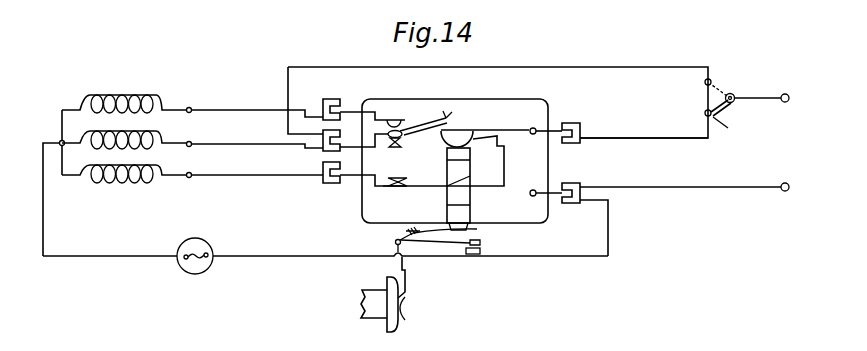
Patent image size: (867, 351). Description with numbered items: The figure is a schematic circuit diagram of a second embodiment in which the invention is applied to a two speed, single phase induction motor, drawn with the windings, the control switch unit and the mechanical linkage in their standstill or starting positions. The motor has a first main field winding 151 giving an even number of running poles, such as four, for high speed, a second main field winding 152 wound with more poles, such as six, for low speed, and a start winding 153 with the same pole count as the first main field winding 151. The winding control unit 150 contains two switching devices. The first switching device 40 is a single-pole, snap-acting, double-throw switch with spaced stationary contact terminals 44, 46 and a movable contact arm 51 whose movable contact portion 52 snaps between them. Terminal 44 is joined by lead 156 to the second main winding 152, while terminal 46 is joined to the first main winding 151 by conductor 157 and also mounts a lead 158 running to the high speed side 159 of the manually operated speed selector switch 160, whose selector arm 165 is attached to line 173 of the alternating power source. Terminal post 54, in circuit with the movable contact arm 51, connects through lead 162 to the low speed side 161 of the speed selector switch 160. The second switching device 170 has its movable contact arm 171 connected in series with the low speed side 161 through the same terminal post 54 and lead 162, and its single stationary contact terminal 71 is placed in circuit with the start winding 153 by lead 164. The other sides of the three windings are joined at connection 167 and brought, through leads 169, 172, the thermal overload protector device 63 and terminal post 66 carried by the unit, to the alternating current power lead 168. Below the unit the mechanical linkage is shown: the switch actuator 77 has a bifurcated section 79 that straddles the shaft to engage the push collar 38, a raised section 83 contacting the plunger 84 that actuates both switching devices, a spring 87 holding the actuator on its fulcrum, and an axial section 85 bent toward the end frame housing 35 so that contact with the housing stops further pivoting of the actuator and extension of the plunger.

The second main field winding 152 is at (160, 101).
The first main field winding 151 is at (163, 135).
The start winding 153 is at (135, 183).
The lead 156 is at (229, 109).
The conductor 157 is at (236, 143).
The lead 164 is at (258, 176).
The connection 167 is at (60, 141).
The stationary contact terminal 44 is at (343, 104).
The stationary contact terminal 46 is at (342, 146).
The stationary contact terminal 71 is at (354, 176).
The lead 158 is at (552, 66).
The winding control unit 150 is at (455, 150).
The first switching device 40 is at (537, 163).
The movable contact portion 52 is at (402, 133).
The movable contact arm 51 is at (491, 129).
The movable contact arm 171 is at (421, 183).
The second switching device 170 is at (432, 210).
The plunger 84 is at (470, 221).
The terminal post 54 is at (557, 124).
The terminal post 66 is at (557, 185).
The lead 162 is at (605, 137).
The alternating current power lead 168 is at (717, 189).
The high speed side 159 is at (704, 82).
The speed selector switch 160 is at (748, 97).
The selector arm 165 is at (703, 101).
The low speed side 161 is at (704, 116).
The line 173 is at (767, 103).
The lead 169 is at (104, 258).
The thermal overload protector device 63 is at (209, 273).
The lead 172 is at (296, 258).
The spring 87 is at (405, 233).
The raised section 83 is at (478, 230).
The axial section 85 is at (481, 243).
The end frame housing 35 is at (464, 251).
The switch actuator 77 is at (407, 277).
The push collar 38 is at (372, 305).
The bifurcated section 79 is at (408, 308).